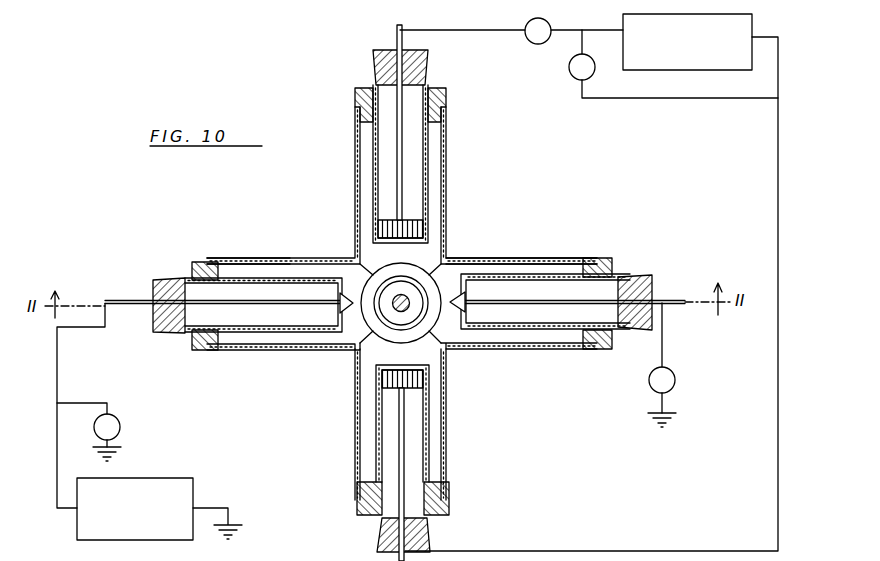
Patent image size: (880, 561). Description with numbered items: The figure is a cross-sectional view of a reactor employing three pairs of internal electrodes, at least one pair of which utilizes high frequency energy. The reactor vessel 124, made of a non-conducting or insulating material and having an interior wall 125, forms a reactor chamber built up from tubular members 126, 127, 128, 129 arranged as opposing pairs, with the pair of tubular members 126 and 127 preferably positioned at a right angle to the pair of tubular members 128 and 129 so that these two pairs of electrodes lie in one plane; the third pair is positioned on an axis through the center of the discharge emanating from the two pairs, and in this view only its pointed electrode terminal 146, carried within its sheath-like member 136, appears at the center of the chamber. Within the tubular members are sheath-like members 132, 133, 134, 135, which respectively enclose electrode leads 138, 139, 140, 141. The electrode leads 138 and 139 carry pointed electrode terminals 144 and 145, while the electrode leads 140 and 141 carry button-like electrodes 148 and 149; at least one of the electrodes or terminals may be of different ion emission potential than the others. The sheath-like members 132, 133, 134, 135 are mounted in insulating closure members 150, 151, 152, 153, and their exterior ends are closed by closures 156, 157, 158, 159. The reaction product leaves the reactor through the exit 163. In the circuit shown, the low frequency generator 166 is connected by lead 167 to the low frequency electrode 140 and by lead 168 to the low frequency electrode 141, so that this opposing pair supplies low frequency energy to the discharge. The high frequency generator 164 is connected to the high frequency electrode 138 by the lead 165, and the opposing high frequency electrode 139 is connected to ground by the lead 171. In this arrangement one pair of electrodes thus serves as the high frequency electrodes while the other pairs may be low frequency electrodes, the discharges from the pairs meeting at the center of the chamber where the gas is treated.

The reactor vessel 124 is at (269, 256).
The interior wall 125 is at (302, 262).
The tubular member 126 is at (275, 351).
The tubular member 127 is at (548, 260).
The tubular member 128 is at (356, 160).
The tubular member 129 is at (445, 437).
The sheath-like member 132 is at (246, 270).
The sheath-like member 133 is at (525, 273).
The sheath-like member 134 is at (428, 134).
The sheath-like member 135 is at (380, 436).
The sheath-like member 136 is at (405, 263).
The electrode lead 138 is at (126, 312).
The electrode lead 139 is at (667, 300).
The electrode lead 140 is at (402, 162).
The electrode lead 141 is at (406, 466).
The pointed electrode terminal 144 is at (350, 318).
The pointed electrode terminal 145 is at (454, 318).
The pointed electrode terminal 146 is at (400, 308).
The button-like electrode 148 is at (423, 232).
The button-like electrode 149 is at (397, 373).
The insulating closure member 150 is at (195, 351).
The insulating closure member 151 is at (605, 350).
The insulating closure member 152 is at (357, 101).
The insulating closure member 153 is at (357, 508).
The closure 156 is at (160, 280).
The closure 157 is at (652, 317).
The closure 158 is at (430, 55).
The closure 159 is at (432, 541).
The exit 163 is at (193, 556).
The high frequency generator 164 is at (170, 478).
The lead 165 is at (57, 382).
The low frequency generator 166 is at (752, 22).
The lead 167 is at (486, 30).
The lead 168 is at (778, 215).
The lead 171 is at (665, 367).